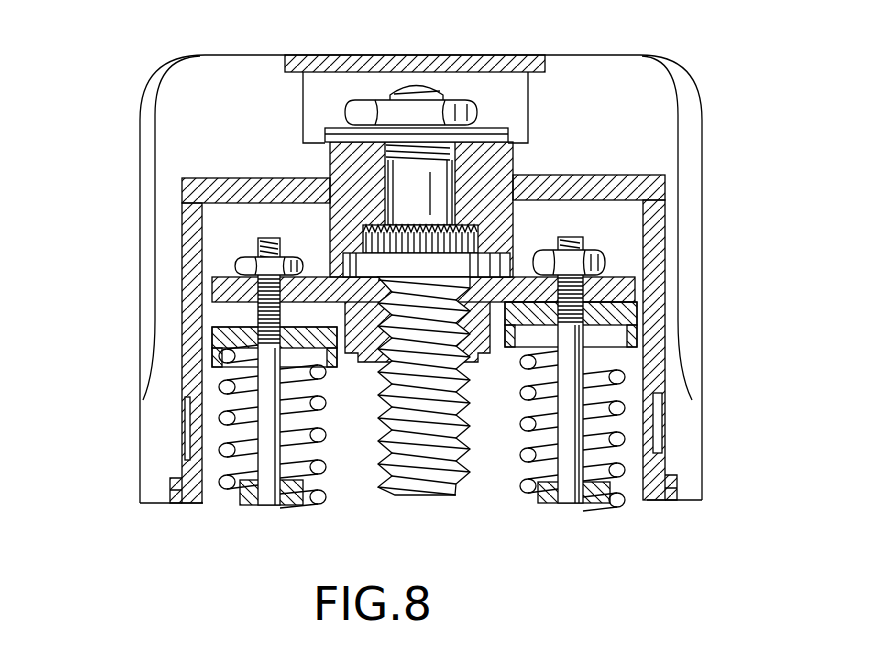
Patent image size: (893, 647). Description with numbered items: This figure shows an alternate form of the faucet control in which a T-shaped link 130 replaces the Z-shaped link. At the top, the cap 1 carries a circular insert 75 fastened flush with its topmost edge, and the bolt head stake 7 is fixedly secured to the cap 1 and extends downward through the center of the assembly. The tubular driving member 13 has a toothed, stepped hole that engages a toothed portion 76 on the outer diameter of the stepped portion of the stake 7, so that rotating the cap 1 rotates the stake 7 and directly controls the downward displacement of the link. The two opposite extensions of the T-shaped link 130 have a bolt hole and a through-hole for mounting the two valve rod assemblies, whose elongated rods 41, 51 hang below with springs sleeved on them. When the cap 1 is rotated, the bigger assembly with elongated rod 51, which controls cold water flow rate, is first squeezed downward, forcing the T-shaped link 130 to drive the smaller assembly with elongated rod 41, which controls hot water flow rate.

The cap 1 is at (230, 68).
The tubular driving member 13 is at (182, 255).
The circular insert 75 is at (414, 57).
The toothed portion 76 is at (462, 215).
The T-shaped link 130 is at (522, 277).
The bolt head stake 7 is at (432, 496).
The elongated rod 41 is at (277, 498).
The elongated rod 51 is at (577, 422).